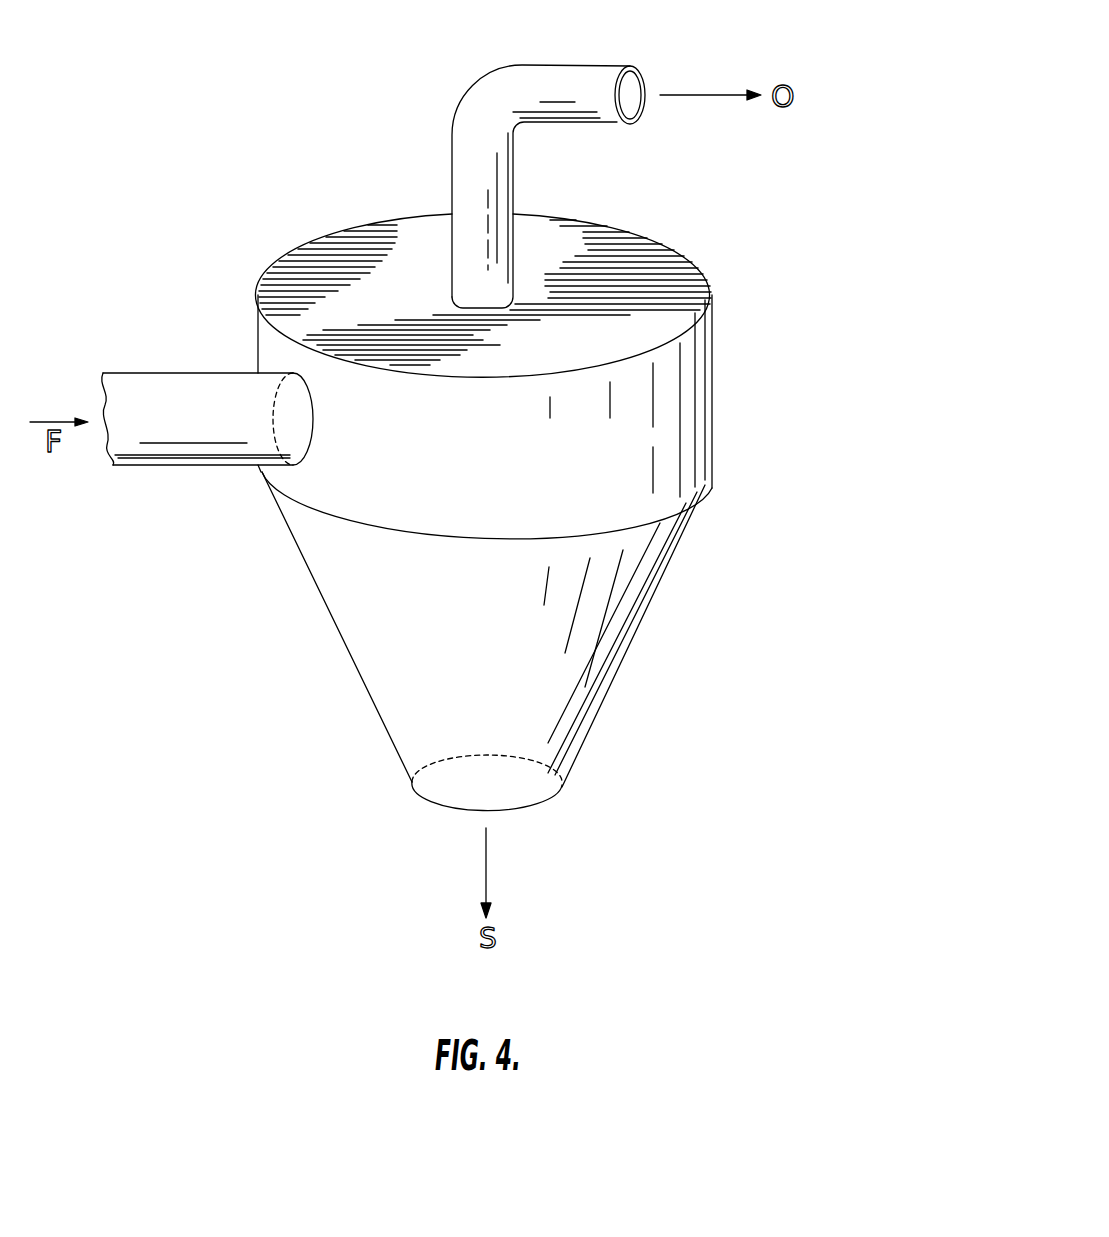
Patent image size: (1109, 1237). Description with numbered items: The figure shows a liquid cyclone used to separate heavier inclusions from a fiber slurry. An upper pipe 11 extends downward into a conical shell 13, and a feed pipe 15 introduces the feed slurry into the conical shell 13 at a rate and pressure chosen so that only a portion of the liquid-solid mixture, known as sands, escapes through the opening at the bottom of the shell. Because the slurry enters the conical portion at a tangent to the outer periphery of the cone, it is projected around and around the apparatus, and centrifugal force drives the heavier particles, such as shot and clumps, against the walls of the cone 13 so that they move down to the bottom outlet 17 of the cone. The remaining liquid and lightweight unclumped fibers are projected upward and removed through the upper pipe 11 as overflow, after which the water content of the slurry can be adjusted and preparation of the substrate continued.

The upper pipe 11 is at (533, 128).
The conical shell 13 is at (667, 562).
The feed pipe 15 is at (192, 468).
The bottom outlet 17 is at (532, 805).